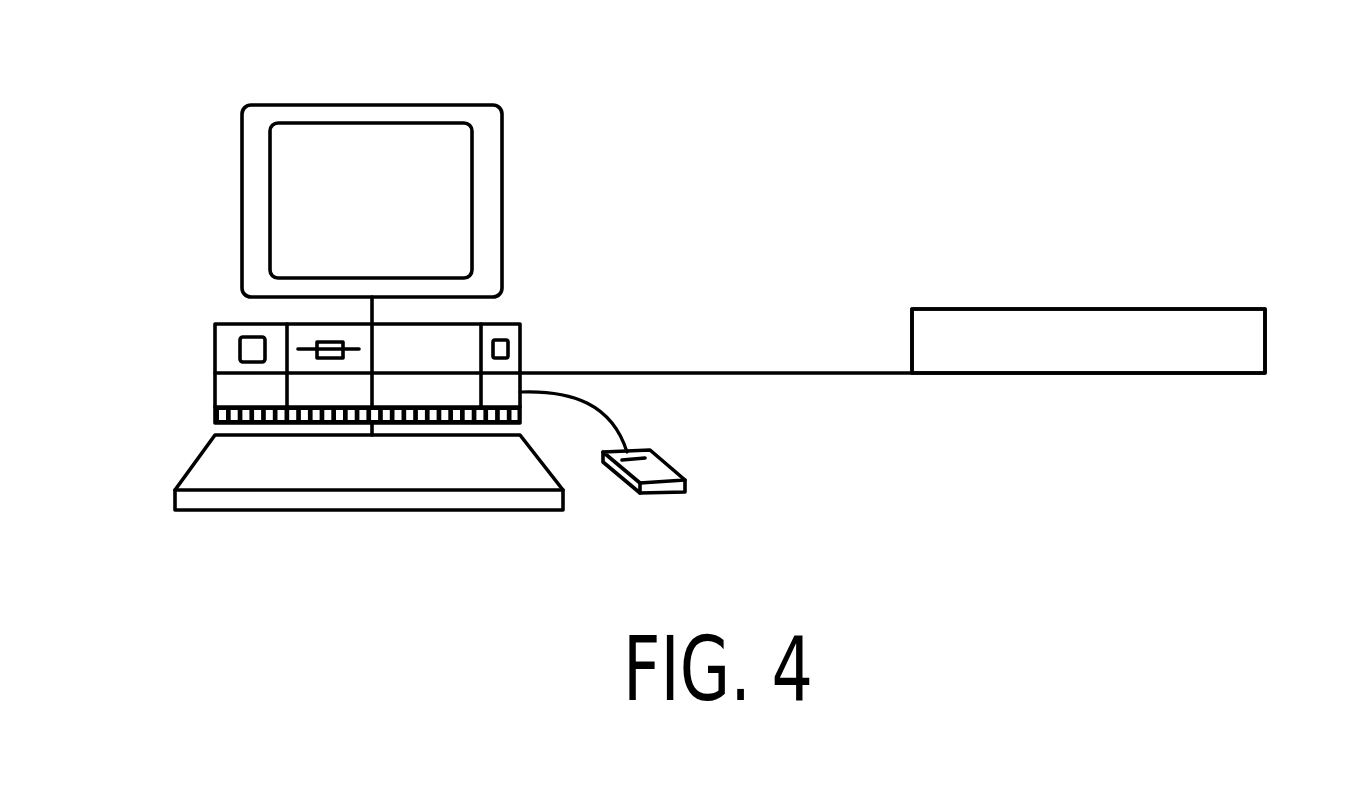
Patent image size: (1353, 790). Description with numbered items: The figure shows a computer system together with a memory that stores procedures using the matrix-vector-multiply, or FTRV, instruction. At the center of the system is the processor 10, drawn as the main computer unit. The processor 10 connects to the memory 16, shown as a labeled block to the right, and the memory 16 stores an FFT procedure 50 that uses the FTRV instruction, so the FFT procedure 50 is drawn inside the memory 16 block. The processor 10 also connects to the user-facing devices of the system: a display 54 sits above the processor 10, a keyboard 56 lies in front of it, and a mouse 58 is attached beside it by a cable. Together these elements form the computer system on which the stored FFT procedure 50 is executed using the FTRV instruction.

The processor 10 is at (520, 326).
The memory 16 is at (1185, 309).
The FFT procedure 50 is at (1265, 338).
The display 54 is at (388, 105).
The keyboard 56 is at (205, 452).
The mouse 58 is at (662, 463).